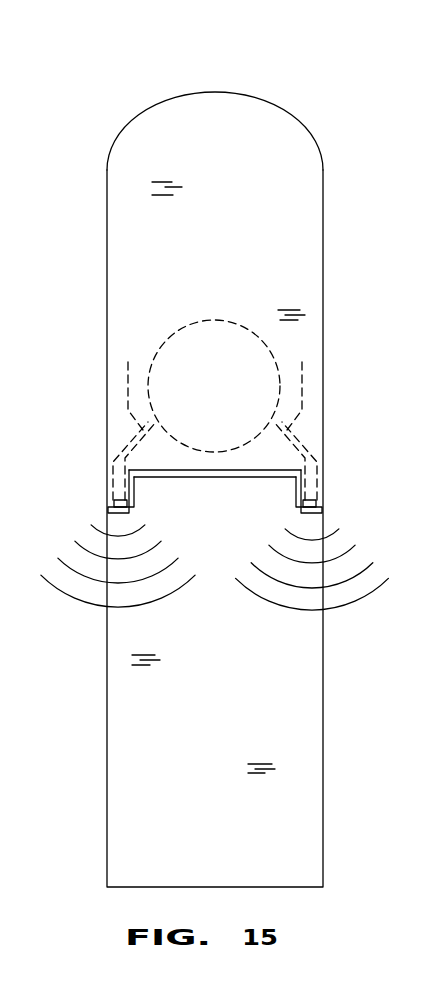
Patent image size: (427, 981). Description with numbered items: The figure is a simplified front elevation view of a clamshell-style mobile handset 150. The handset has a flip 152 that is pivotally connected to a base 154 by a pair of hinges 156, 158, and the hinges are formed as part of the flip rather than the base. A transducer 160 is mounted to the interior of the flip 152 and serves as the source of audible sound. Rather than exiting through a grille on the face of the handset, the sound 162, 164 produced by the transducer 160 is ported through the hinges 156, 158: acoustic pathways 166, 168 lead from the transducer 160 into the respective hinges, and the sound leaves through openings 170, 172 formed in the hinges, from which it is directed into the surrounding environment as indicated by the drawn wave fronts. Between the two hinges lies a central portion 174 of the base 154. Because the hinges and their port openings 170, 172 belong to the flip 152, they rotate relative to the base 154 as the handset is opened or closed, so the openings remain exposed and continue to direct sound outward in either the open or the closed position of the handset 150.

The handset 150 is at (194, 456).
The flip 152 is at (302, 110).
The base 154 is at (106, 840).
The hinge 156 is at (112, 483).
The hinge 158 is at (320, 483).
The transducer 160 is at (190, 322).
The sound 162 is at (75, 592).
The sound 164 is at (343, 600).
The acoustic pathway 166 is at (156, 348).
The acoustic pathway 168 is at (272, 346).
The opening 170 is at (114, 503).
The opening 172 is at (316, 503).
The central portion 174 is at (222, 495).